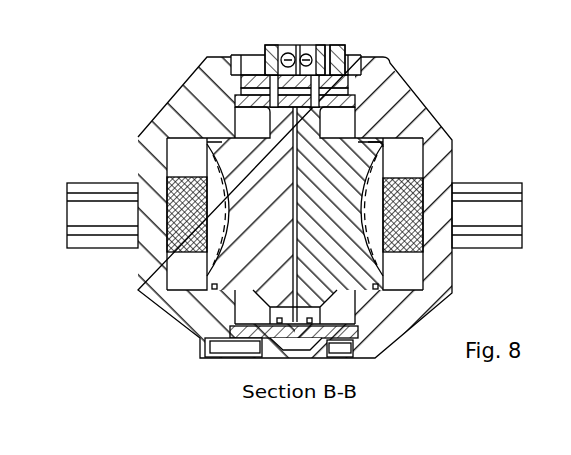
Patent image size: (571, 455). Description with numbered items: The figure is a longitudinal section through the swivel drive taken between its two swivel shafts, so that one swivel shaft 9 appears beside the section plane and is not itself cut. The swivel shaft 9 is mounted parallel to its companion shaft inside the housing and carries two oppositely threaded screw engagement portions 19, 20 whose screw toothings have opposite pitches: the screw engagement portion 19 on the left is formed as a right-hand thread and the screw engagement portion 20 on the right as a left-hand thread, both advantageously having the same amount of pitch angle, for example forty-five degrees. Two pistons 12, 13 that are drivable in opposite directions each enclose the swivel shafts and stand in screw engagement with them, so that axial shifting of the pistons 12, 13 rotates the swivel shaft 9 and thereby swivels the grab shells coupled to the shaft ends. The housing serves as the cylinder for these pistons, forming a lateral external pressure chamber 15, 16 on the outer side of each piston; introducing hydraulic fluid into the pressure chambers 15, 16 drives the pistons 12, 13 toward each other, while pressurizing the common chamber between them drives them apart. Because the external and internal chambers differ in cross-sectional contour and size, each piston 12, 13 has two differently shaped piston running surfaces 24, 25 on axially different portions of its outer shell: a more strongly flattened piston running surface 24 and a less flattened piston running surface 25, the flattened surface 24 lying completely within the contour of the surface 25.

The swivel shaft 9 is at (512, 188).
The piston 12 is at (367, 272).
The piston 13 is at (233, 132).
The pressure chamber 15 is at (177, 155).
The pressure chamber 16 is at (420, 163).
The screw engagement portion 19 is at (423, 185).
The screw engagement portion 20 is at (180, 257).
The piston running surface 24 is at (367, 130).
The piston running surface 25 is at (321, 102).